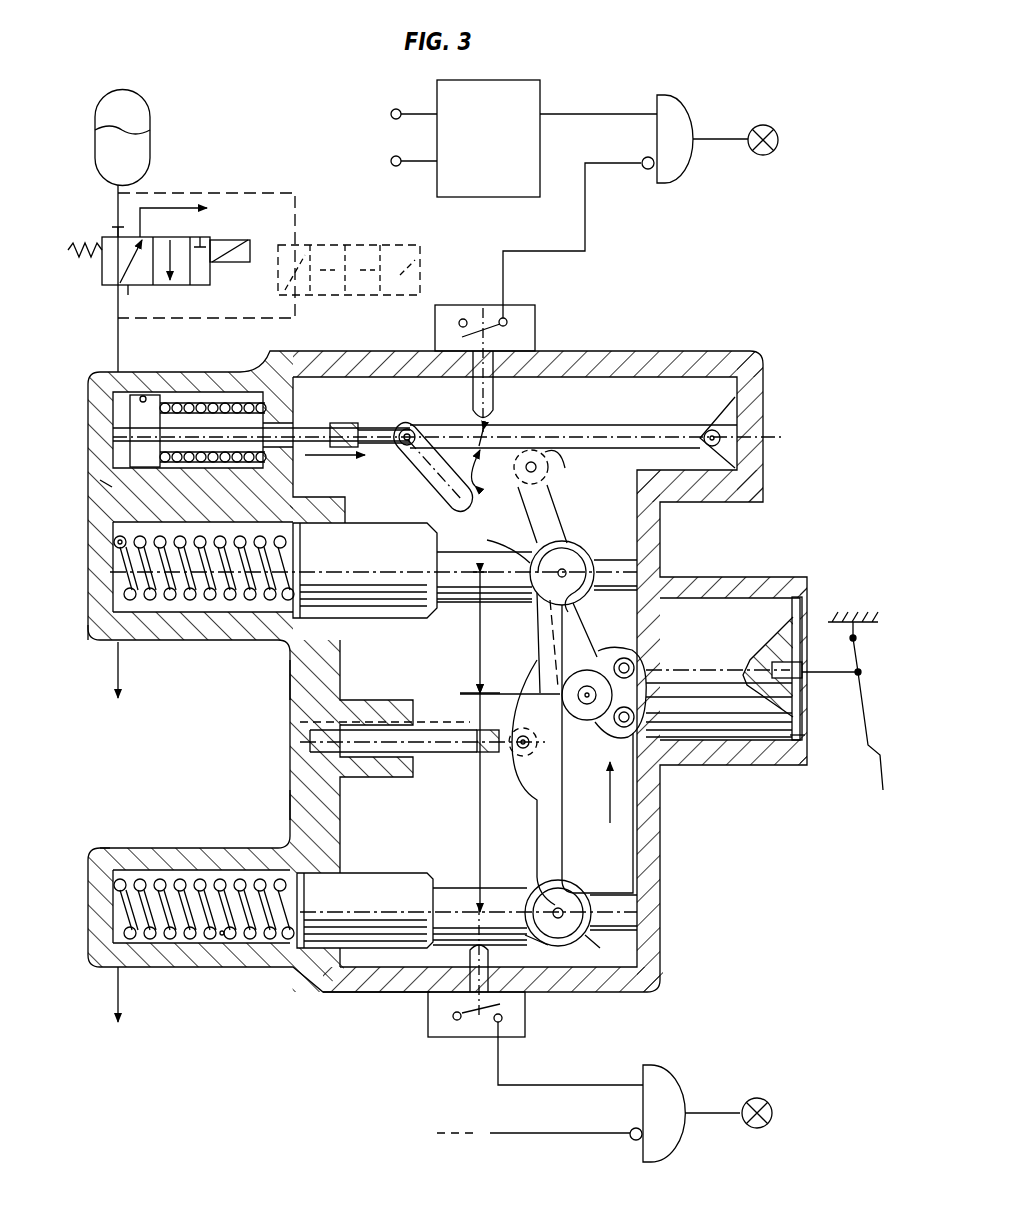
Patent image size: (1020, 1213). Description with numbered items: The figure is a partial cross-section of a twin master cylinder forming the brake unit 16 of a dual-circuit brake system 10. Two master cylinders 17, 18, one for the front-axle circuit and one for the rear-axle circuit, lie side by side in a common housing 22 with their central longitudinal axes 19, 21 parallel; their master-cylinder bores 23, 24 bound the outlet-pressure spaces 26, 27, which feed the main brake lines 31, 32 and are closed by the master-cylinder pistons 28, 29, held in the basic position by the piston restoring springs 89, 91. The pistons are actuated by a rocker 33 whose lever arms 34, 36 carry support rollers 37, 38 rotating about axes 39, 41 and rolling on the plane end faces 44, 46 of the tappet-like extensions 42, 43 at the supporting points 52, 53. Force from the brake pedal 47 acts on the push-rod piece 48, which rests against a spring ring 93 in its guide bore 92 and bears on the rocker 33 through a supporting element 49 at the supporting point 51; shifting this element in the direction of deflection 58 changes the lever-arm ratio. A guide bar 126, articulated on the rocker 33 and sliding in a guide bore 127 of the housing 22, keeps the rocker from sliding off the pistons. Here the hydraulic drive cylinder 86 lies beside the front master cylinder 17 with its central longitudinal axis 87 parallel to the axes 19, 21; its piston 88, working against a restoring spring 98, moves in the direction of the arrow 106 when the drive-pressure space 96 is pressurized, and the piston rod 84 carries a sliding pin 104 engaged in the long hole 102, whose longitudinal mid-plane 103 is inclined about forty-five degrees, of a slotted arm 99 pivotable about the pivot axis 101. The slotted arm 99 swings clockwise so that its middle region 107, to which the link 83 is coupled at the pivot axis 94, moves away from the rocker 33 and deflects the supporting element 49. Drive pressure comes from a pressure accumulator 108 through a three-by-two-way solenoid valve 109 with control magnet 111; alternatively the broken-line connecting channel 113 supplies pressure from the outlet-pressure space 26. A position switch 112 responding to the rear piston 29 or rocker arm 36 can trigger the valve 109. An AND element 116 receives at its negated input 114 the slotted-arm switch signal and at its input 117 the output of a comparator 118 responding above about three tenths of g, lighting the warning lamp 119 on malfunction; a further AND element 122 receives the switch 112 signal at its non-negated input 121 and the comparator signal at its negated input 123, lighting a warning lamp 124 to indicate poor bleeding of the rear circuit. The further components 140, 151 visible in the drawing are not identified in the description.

The dual-circuit brake system 10 is at (788, 324).
The twin master cylinder 16 is at (290, 690).
The master cylinder 17 is at (90, 632).
The master cylinder 18 is at (100, 850).
The central longitudinal axis 19 is at (203, 622).
The central longitudinal axis 21 is at (195, 880).
The common housing 22 is at (300, 797).
The master-cylinder bore 23 is at (158, 622).
The master-cylinder bore 24 is at (160, 948).
The outlet-pressure space 26 is at (112, 555).
The outlet-pressure space 27 is at (222, 948).
The master-cylinder piston 28 is at (373, 622).
The master-cylinder piston 29 is at (371, 873).
The main brake line 31 is at (112, 678).
The main brake line 32 is at (112, 985).
The rocker 33 is at (532, 772).
The lever arm 34 is at (544, 660).
The lever arm 36 is at (548, 823).
The support roller 37 is at (571, 546).
The support roller 38 is at (560, 882).
The axis of rotation 39 is at (539, 601).
The axis of rotation 41 is at (566, 922).
The tappet-like extension 42 is at (468, 598).
The tappet-like extension 43 is at (454, 890).
The end face 44 is at (466, 495).
The end face 46 is at (499, 905).
The brake pedal 47 is at (865, 706).
The push-rod piece 48 is at (776, 602).
The supporting element 49 is at (596, 742).
The supporting point 51 is at (560, 690).
The supporting point 52 is at (503, 550).
The supporting point 53 is at (428, 995).
The direction of deflection 58 is at (653, 800).
The link 83 is at (558, 512).
The piston rod 84 is at (371, 425).
The hydraulic drive cylinder 86 is at (185, 372).
The central longitudinal axis 87 is at (304, 423).
The piston 88 is at (150, 400).
The piston restoring spring 89 is at (243, 622).
The piston restoring spring 91 is at (150, 880).
The guide bore 92 is at (805, 620).
The spring ring 93 is at (803, 735).
The pivot axis 94 is at (535, 452).
The drive-pressure space 96 is at (112, 400).
The restoring spring 98 is at (212, 405).
The slotted arm 99 is at (598, 420).
The pivot axis 101 is at (705, 430).
The slot 102 is at (470, 425).
The longitudinal mid-plane 103 is at (421, 462).
The sliding pin 104 is at (407, 428).
The arrow 106 is at (333, 462).
The middle region 107 is at (553, 455).
The pressure accumulator 108 is at (148, 118).
The solenoid valve 109 is at (206, 277).
The control magnet 111 is at (214, 240).
The position switch 112 is at (525, 1024).
The connecting channel 113 is at (110, 485).
The negated input 114 is at (642, 172).
The AND element 116 is at (682, 112).
The input 117 is at (648, 112).
The comparator 118 is at (470, 188).
The warning lamp 119 is at (758, 124).
The non-negated input 121 is at (640, 1080).
The AND element 122 is at (676, 1085).
The negated input 123 is at (630, 1142).
The warning lamp 124 is at (755, 1097).
The guide bar 126 is at (442, 760).
The guide bore 127 is at (310, 745).
The upper switch 140 is at (537, 322).
The pressure limiting valve 151 is at (353, 295).